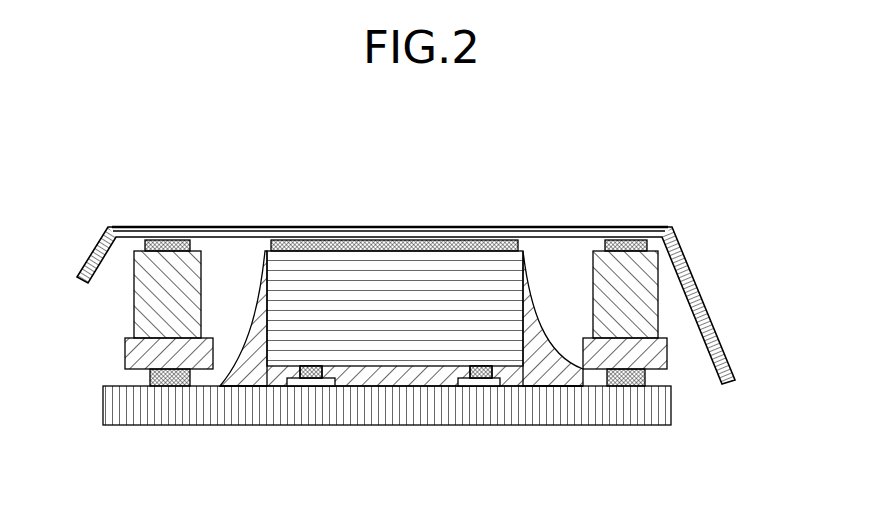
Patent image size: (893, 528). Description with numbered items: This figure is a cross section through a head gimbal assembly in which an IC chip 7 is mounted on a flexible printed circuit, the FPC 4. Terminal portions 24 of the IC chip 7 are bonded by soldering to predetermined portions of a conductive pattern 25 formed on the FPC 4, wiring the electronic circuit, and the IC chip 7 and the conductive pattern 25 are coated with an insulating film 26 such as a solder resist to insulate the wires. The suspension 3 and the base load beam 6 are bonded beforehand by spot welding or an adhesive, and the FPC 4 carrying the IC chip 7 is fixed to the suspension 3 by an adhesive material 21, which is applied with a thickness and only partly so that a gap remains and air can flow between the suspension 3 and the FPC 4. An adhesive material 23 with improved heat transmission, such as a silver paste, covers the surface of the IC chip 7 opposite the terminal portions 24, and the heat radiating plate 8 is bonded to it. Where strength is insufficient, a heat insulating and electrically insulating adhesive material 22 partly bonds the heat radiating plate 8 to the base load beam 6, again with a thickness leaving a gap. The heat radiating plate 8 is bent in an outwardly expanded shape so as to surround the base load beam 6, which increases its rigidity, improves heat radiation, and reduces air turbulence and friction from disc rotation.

The suspension 3 is at (130, 352).
The FPC 4 is at (118, 417).
The base load beam 6 is at (137, 302).
The IC chip 7 is at (334, 270).
The heat radiating plate 8 is at (555, 232).
The adhesive material 21 is at (167, 390).
The heat insulating and electrical insulating adhesive material 22 is at (170, 242).
The adhesive material 23 is at (452, 246).
The terminal portions 24 is at (290, 372).
The conductive pattern 25 is at (317, 386).
The insulating film 26 is at (558, 373).